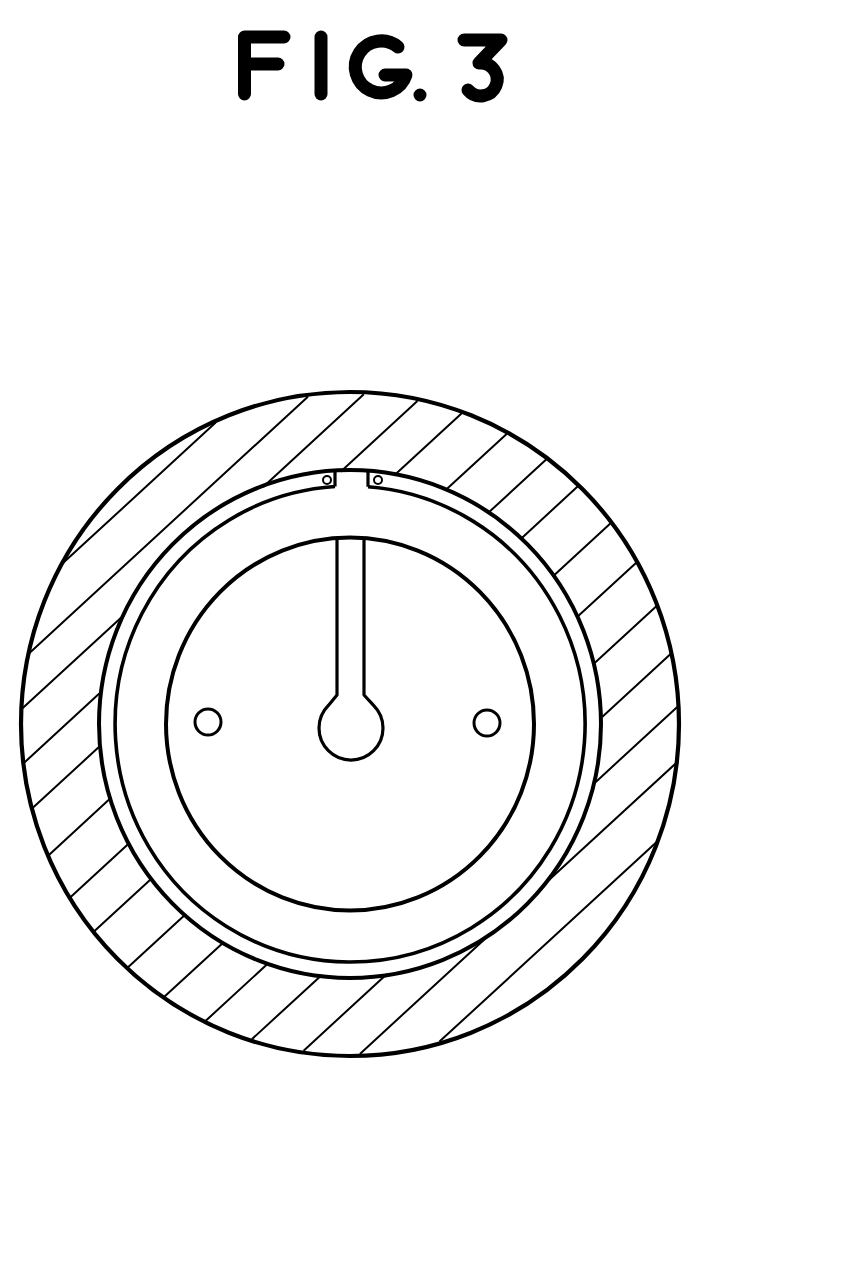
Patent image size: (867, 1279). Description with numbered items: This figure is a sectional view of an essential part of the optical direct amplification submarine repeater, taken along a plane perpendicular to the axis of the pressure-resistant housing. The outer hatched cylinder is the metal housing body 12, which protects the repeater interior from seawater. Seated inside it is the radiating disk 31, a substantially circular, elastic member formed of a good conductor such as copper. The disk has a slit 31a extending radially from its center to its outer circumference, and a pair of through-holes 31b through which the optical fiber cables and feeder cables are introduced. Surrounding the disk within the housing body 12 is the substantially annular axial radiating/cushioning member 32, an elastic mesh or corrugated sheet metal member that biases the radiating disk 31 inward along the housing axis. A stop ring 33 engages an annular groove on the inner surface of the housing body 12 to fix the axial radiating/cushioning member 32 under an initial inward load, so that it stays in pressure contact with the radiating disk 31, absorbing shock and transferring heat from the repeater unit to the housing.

The housing body 12 is at (562, 466).
The radiating disk 31 is at (375, 897).
The slit 31a is at (340, 638).
The through-holes 31b is at (212, 727).
The axial radiating/cushioning member 32 is at (553, 641).
The stop ring 33 is at (592, 760).